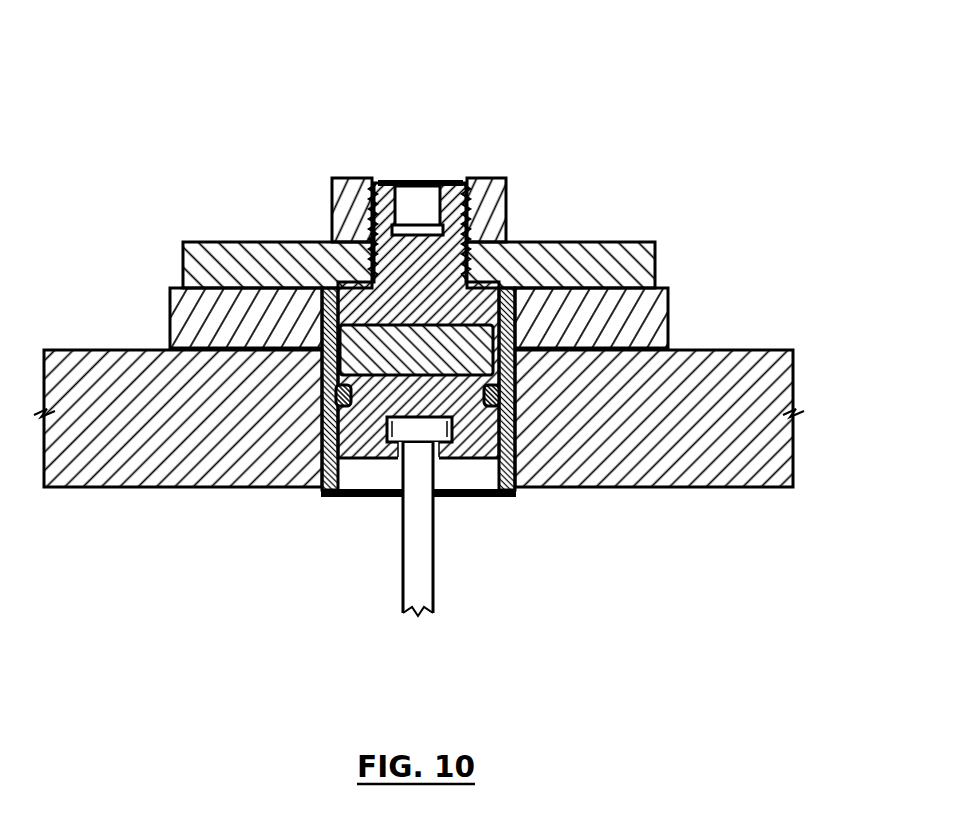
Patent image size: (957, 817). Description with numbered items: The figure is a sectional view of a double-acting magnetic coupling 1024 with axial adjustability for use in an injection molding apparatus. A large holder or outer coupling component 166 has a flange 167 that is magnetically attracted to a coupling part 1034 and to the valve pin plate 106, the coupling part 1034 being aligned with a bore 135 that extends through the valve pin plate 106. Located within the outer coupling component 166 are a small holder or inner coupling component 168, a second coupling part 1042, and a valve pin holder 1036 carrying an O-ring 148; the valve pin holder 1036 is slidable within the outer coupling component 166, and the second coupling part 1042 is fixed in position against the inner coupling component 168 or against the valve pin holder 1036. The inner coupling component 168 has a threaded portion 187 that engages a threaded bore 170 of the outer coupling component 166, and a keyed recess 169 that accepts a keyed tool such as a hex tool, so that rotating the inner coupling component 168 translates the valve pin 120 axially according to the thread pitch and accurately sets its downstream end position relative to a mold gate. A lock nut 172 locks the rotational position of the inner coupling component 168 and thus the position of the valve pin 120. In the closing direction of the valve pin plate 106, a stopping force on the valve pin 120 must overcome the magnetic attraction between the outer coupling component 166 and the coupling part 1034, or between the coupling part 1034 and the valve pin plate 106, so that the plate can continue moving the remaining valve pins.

The double-acting magnetic coupling 1024 is at (328, 102).
The keyed recess 169 is at (427, 178).
The inner coupling component 168 is at (388, 178).
The threaded portion 187 is at (477, 178).
The lock nut 172 is at (506, 192).
The outer coupling component 166 is at (533, 235).
The threaded bore 170 is at (373, 222).
The flange 167 is at (628, 260).
The coupling part 1034 is at (643, 318).
The valve pin plate 106 is at (768, 375).
The O-ring 148 is at (500, 395).
The second coupling part 1042 is at (342, 357).
The bore 135 is at (348, 460).
The valve pin holder 1036 is at (483, 443).
The valve pin 120 is at (418, 593).